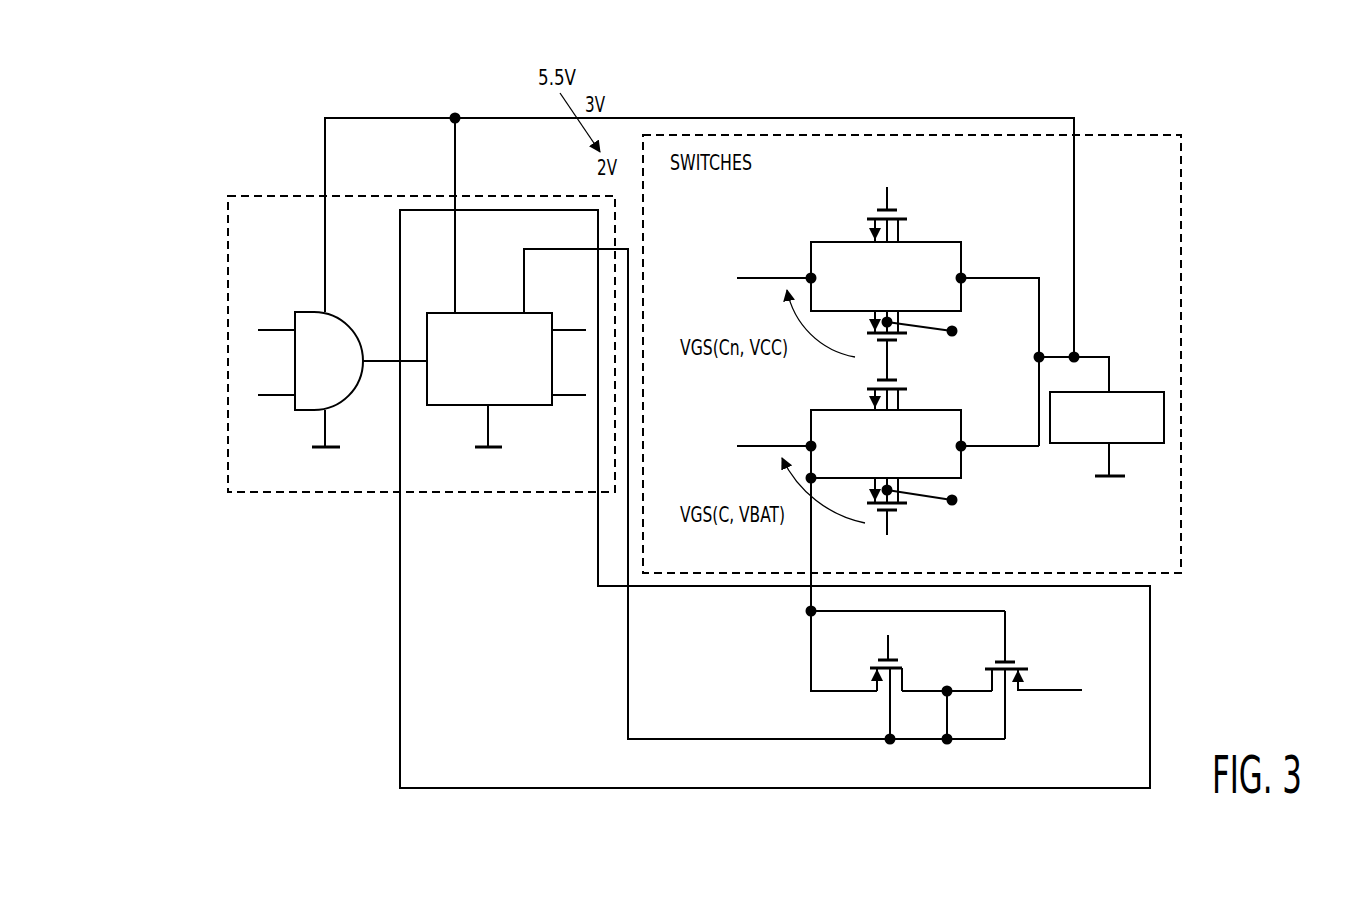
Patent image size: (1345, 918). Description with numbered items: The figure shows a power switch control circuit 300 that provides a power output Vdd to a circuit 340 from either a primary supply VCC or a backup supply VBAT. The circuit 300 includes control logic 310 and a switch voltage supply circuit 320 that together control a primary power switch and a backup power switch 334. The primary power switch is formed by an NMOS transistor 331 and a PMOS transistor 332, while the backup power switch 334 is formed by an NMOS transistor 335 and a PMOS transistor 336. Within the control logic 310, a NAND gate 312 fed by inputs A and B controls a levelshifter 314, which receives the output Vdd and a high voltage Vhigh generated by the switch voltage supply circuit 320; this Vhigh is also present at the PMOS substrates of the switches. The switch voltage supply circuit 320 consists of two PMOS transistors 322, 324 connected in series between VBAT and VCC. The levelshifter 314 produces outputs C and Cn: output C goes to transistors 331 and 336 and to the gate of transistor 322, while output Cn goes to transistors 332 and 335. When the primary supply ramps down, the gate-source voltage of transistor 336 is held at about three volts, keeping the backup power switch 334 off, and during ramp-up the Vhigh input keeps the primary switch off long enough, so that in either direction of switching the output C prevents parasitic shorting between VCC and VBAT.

The power switch control circuit 300 is at (1225, 142).
The control logic 310 is at (258, 196).
The NAND gate 312 is at (341, 313).
The levelshifter 314 is at (525, 406).
The switch voltage supply circuit 320 is at (770, 703).
The PMOS transistor 322 is at (905, 668).
The PMOS transistor 324 is at (1012, 660).
The NMOS transistor 331 is at (903, 212).
The PMOS transistor 332 is at (905, 338).
The backup power switch 334 is at (945, 396).
The NMOS transistor 335 is at (868, 398).
The PMOS transistor 336 is at (892, 514).
The circuit 340 is at (1142, 392).